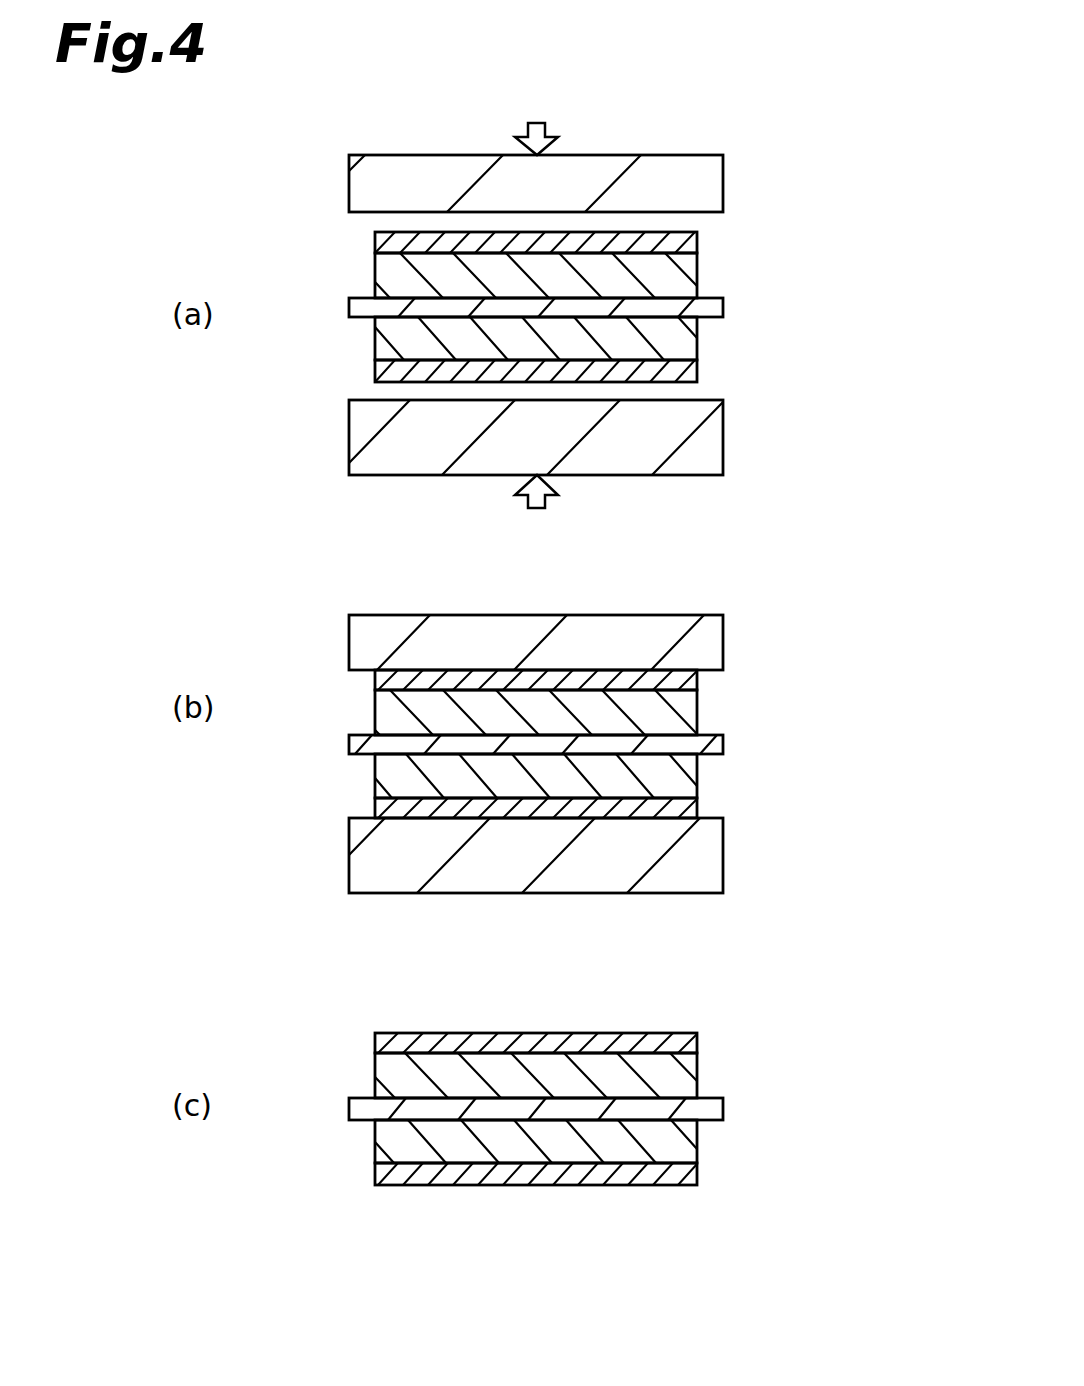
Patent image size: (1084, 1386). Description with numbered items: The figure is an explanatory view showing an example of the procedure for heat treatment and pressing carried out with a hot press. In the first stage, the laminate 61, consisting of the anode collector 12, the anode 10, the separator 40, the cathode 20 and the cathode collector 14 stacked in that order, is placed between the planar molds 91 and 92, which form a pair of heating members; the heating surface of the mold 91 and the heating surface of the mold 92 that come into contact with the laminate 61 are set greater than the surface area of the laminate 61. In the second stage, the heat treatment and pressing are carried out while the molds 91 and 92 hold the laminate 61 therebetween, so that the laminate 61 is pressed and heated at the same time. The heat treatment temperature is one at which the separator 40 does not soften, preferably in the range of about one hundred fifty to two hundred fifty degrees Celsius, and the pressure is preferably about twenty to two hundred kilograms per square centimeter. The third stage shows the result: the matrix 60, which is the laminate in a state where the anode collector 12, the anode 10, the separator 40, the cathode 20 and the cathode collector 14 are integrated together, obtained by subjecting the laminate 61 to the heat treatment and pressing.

The planar mold 91 is at (712, 183).
The planar mold 92 is at (690, 445).
The anode collector 12 is at (697, 243).
The anode 10 is at (697, 275).
The separator 40 is at (712, 305).
The cathode 20 is at (683, 342).
The cathode collector 14 is at (697, 367).
The laminate 61 is at (856, 222).
The matrix 60 is at (856, 1027).